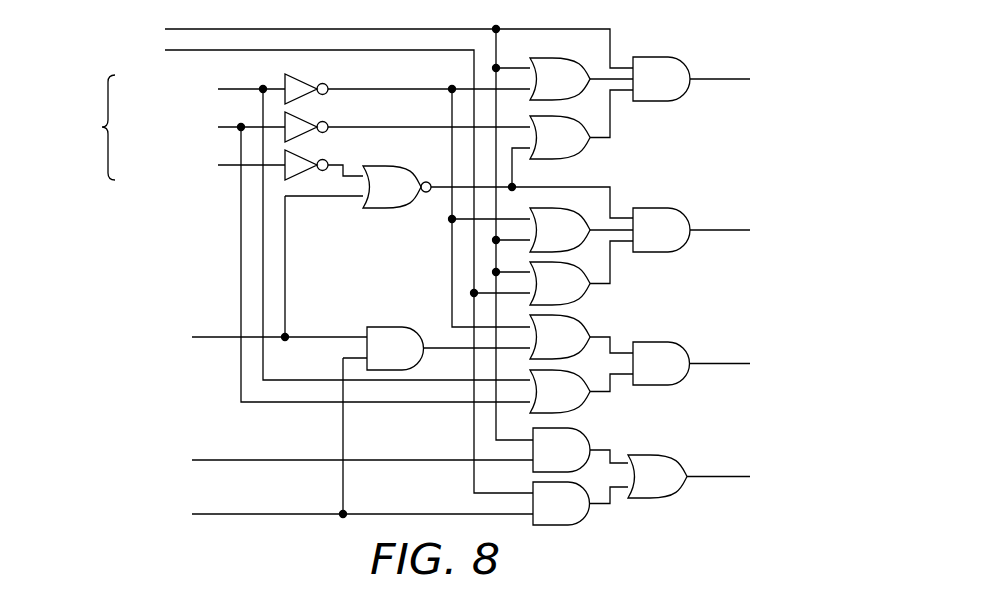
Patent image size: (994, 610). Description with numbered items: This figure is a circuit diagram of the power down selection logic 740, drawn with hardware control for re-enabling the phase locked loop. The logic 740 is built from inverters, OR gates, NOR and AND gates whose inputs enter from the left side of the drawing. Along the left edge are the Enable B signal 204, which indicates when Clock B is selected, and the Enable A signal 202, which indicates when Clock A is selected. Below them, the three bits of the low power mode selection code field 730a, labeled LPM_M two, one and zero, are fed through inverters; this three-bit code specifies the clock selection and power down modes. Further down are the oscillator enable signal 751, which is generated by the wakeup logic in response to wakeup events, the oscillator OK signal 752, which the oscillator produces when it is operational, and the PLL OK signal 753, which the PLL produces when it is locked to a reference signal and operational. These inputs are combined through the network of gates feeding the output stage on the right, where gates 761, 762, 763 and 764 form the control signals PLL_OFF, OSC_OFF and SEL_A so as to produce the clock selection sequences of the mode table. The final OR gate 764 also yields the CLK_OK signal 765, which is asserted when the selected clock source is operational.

The power down selection logic 740 is at (795, 32).
The Enable B signal 204 is at (118, 32).
The Enable A signal 202 is at (118, 48).
The low power mode selection code field 730a is at (285, 238).
The oscillator enable signal 751 is at (118, 334).
The oscillator OK signal 752 is at (116, 456).
The PLL OK signal 753 is at (118, 509).
The gate 761 is at (661, 56).
The gate 762 is at (661, 207).
The gate 763 is at (661, 341).
The gate 764 is at (648, 500).
The CLK_OK signal 765 is at (795, 495).